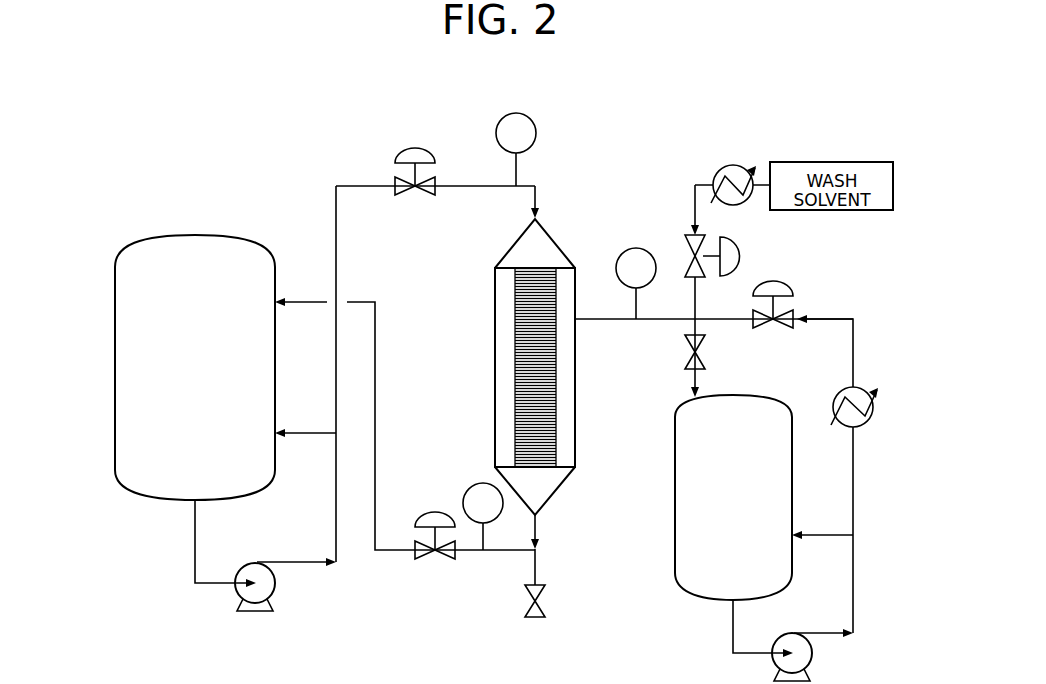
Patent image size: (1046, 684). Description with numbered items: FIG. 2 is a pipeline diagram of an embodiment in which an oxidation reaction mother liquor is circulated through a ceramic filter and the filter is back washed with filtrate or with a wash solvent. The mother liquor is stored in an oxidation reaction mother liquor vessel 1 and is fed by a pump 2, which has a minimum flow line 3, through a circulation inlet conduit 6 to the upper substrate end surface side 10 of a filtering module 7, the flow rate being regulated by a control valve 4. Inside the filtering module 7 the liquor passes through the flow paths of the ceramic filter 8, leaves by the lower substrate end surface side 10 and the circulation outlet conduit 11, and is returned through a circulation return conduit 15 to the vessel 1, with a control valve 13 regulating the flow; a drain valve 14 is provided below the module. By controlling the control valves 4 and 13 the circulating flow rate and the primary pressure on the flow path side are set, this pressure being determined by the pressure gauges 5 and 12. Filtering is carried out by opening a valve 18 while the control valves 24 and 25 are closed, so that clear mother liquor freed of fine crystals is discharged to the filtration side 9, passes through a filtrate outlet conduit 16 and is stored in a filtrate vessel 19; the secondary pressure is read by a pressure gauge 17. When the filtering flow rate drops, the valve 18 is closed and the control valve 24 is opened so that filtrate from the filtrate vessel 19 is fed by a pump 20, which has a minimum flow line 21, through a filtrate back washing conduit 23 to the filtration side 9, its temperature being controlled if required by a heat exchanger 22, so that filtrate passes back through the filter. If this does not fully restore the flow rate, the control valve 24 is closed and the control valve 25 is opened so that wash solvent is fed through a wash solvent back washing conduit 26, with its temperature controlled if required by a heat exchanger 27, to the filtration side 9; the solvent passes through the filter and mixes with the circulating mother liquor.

The oxidation reaction mother liquor vessel 1 is at (195, 367).
The pump 2 is at (245, 566).
The minimum flow line 3 is at (307, 428).
The control valve 4 is at (405, 196).
The pressure gauge (P1) 5 is at (495, 130).
The circulation inlet conduit 6 is at (542, 202).
The filtering module 7 is at (494, 403).
The ceramic filter 8 is at (513, 352).
The filtration side 9 is at (563, 312).
The substrate end surface side 10 is at (535, 252).
The circulation outlet conduit 11 is at (540, 532).
The pressure gauge (P2) 12 is at (476, 484).
The control valve 13 is at (425, 556).
The drain valve 14 is at (548, 591).
The circulation return conduit 15 is at (304, 298).
The filtrate outlet conduit 16 is at (598, 321).
The pressure gauge (P3) 17 is at (618, 251).
The valve 18 is at (688, 346).
The filtrate vessel 19 is at (733, 497).
The pump 20 is at (780, 636).
The minimum flow line 21 is at (827, 532).
The heat exchanger 22 is at (838, 393).
The filtrate back washing conduit 23 is at (833, 318).
The control valve 24 is at (761, 329).
The control valve 25 is at (740, 258).
The wash solvent back washing conduit 26 is at (692, 210).
The heat exchanger 27 is at (720, 168).